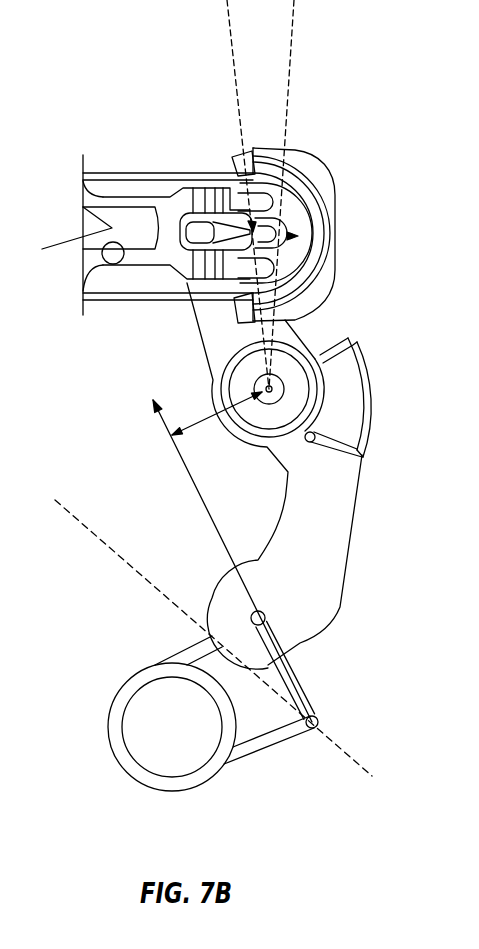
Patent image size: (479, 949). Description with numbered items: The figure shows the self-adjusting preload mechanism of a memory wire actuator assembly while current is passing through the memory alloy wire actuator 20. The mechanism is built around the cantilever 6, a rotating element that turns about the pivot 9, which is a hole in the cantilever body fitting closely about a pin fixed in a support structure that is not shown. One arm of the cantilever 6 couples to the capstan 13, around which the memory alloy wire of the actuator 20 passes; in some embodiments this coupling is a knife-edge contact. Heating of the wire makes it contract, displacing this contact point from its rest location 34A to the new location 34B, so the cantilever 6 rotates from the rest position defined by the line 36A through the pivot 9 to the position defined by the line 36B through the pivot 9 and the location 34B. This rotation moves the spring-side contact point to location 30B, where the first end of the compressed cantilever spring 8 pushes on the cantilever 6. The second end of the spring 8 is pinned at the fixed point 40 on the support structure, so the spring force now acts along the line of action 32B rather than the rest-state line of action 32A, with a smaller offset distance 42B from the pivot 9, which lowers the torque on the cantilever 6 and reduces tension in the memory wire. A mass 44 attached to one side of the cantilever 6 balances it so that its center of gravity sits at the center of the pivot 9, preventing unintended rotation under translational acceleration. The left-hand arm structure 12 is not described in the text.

The memory alloy wire actuator 20 is at (136, 137).
The arm 12 is at (83, 207).
The capstan 13 is at (320, 203).
The contact point location 34A is at (298, 237).
The contact point location 34B is at (250, 222).
The cantilever position line 36A is at (292, 43).
The cantilever position line 36B is at (230, 37).
The pivot 9 is at (282, 381).
The mass 44 is at (348, 407).
The offset distance 42B is at (197, 422).
The line of action 32B is at (190, 478).
The line of action 32A is at (112, 553).
The cantilever 6 is at (328, 572).
The contact point location 30B is at (265, 620).
The cantilever spring 8 is at (108, 735).
The fixed point 40 is at (311, 729).